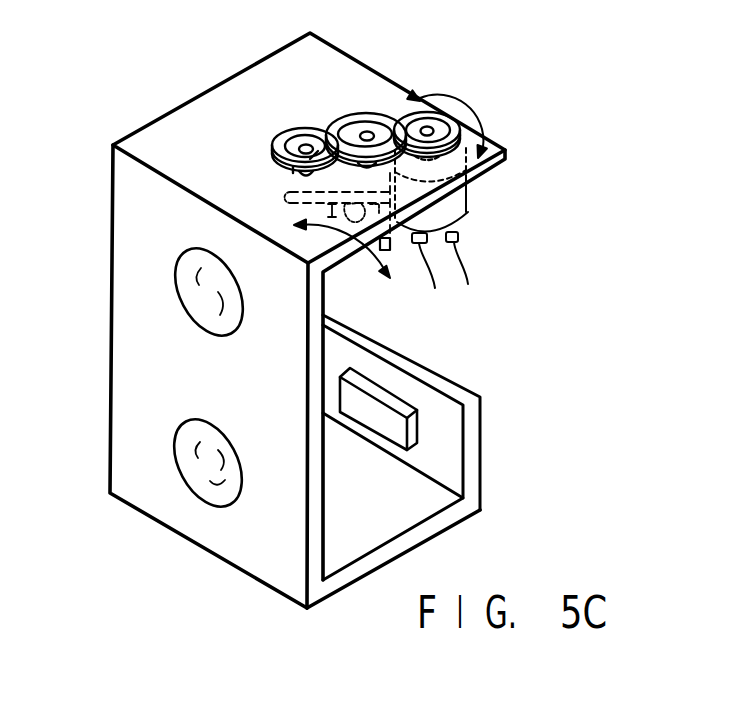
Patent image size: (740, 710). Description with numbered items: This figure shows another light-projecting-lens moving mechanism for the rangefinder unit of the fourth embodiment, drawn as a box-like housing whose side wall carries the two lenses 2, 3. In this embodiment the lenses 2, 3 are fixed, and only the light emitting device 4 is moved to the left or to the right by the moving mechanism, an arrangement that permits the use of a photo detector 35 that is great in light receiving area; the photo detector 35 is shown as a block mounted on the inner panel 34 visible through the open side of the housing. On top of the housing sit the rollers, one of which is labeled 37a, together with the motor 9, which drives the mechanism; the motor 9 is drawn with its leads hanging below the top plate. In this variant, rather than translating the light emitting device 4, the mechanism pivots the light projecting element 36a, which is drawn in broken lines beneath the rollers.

The lens 2 is at (187, 316).
The lens 3 is at (182, 476).
The light emitting device 4 is at (342, 257).
The motor 9 is at (470, 212).
The panel 34 is at (481, 441).
The photo detector 35 is at (388, 397).
The light projecting element 36a is at (390, 249).
The roller 37a is at (300, 127).